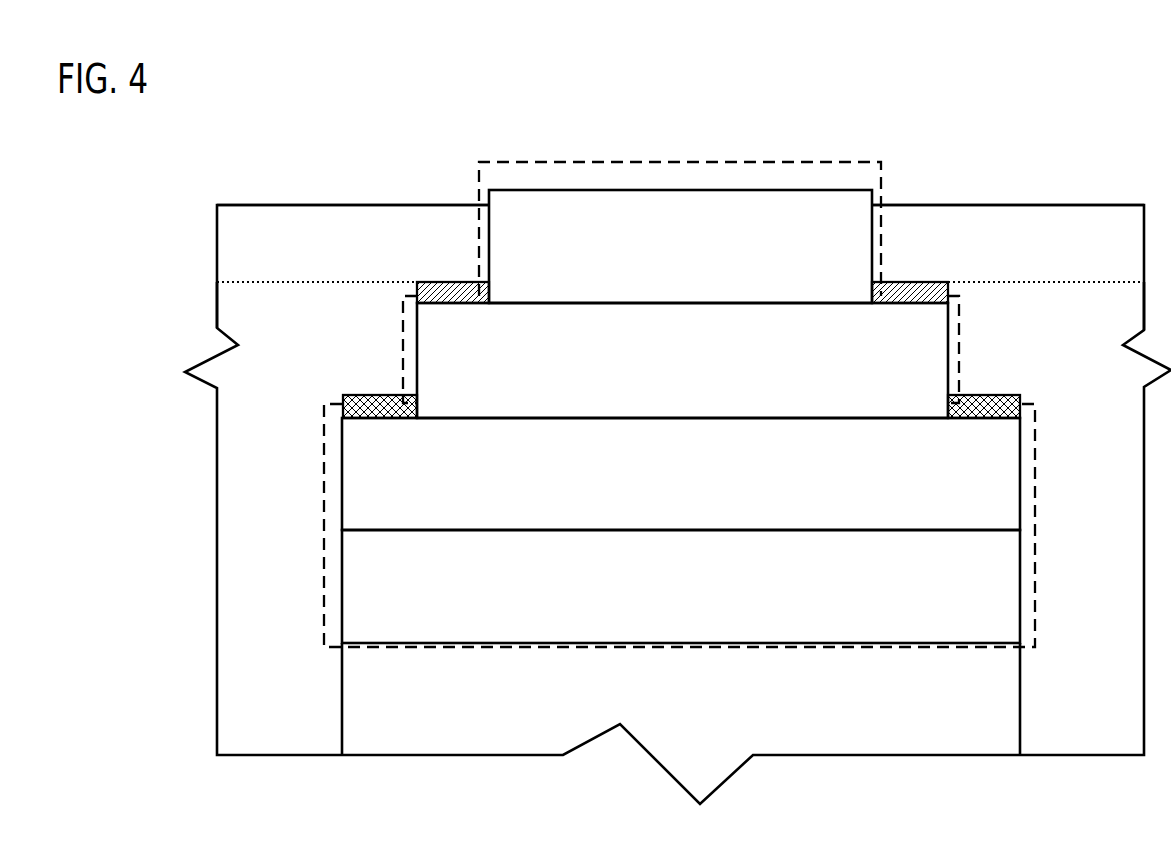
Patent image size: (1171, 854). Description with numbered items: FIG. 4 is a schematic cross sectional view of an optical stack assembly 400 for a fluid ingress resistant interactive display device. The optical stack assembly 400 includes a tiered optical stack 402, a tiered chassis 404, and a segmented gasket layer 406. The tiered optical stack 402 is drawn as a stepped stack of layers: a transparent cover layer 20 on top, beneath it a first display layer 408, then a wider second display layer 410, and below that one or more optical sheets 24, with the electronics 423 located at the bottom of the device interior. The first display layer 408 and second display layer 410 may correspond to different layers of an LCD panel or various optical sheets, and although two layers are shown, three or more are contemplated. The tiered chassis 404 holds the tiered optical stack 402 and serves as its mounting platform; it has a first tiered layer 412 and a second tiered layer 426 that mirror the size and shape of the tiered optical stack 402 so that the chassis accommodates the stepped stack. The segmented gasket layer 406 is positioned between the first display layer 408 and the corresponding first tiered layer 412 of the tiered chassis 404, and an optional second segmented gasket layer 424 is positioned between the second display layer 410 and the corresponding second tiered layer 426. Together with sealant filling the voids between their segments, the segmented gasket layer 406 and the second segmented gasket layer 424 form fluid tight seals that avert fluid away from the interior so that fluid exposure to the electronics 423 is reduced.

The optical stack assembly 400 is at (898, 110).
The tiered optical stack 402 is at (324, 440).
The tiered chassis 404 is at (380, 182).
The segmented gasket layer 406 is at (450, 292).
The first display layer 408 is at (793, 369).
The second display layer 410 is at (803, 483).
The first tiered layer 412 is at (355, 253).
The transparent cover layer 20 is at (818, 256).
The optical sheets 24 is at (765, 596).
The electronics 423 is at (760, 710).
The second segmented gasket layer 424 is at (375, 402).
The second tiered layer 426 is at (316, 351).